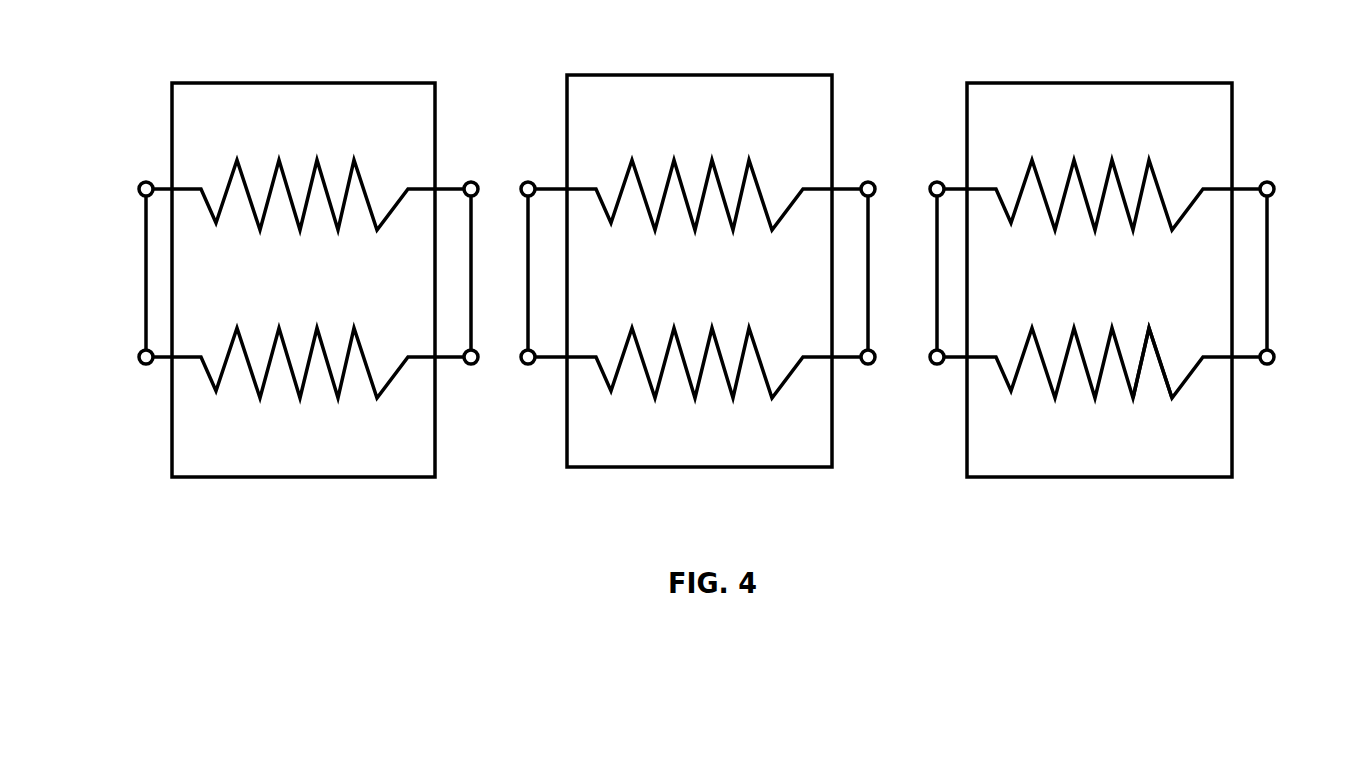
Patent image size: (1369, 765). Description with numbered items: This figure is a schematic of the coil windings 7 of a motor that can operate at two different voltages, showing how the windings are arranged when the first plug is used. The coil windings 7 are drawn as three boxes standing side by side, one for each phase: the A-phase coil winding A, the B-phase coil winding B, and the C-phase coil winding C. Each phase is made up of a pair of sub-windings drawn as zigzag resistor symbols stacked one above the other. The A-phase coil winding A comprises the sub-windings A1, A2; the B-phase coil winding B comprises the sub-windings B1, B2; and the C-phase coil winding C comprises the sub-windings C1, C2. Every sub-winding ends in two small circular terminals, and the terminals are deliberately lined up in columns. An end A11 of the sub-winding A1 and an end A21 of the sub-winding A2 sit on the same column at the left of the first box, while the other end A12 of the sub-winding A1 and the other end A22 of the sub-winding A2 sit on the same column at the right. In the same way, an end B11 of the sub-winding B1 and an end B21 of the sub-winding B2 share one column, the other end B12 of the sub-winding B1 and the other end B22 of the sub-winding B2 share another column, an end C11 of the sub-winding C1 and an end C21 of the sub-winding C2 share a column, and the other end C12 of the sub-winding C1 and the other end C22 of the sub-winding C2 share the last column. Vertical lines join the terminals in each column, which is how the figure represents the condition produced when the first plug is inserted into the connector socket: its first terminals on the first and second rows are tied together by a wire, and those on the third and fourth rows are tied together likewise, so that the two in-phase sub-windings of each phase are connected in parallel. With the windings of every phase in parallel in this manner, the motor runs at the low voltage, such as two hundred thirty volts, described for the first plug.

The coil winding 7 is at (1163, 375).
The A-phase coil winding A is at (303, 251).
The B-phase coil winding B is at (699, 246).
The C-phase coil winding C is at (1099, 252).
The sub-winding A1 is at (308, 165).
The sub-winding A2 is at (308, 394).
The sub-winding B1 is at (698, 167).
The sub-winding B2 is at (698, 392).
The sub-winding C1 is at (1102, 174).
The sub-winding C2 is at (1102, 396).
The end of sub-winding A1 A11 is at (126, 241).
The other end of sub-winding A1 A12 is at (467, 244).
The end of sub-winding A2 A21 is at (125, 378).
The other end of sub-winding A2 A22 is at (468, 378).
The end of sub-winding B1 B11 is at (531, 243).
The other end of sub-winding B1 B12 is at (861, 243).
The end of sub-winding B2 B21 is at (532, 377).
The other end of sub-winding B2 B22 is at (864, 377).
The end of sub-winding C1 C11 is at (933, 244).
The other end of sub-winding C1 C12 is at (1271, 244).
The end of sub-winding C2 C21 is at (938, 377).
The other end of sub-winding C2 C22 is at (1273, 378).